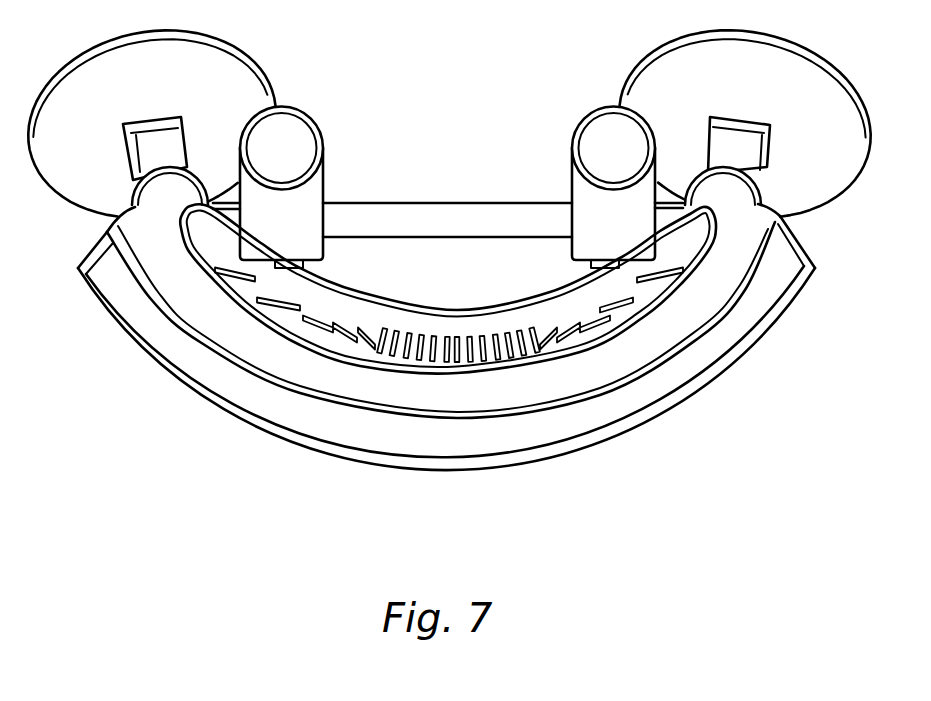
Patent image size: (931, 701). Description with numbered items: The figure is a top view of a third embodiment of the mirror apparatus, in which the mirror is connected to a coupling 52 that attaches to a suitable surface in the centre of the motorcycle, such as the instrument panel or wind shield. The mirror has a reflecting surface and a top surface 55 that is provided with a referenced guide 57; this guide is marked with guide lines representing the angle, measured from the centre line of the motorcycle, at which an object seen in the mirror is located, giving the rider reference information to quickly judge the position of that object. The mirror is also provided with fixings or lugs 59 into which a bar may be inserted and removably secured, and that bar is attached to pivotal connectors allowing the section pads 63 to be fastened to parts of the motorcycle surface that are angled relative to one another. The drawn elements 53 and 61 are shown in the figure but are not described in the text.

The coupling 52 is at (90, 351).
The curved body 53 is at (732, 333).
The top surface 55 is at (418, 310).
The referenced guide 57 is at (347, 338).
The fixings or lugs 59 is at (572, 188).
The cylindrical post 61 is at (297, 127).
The section pads 63 is at (97, 53).